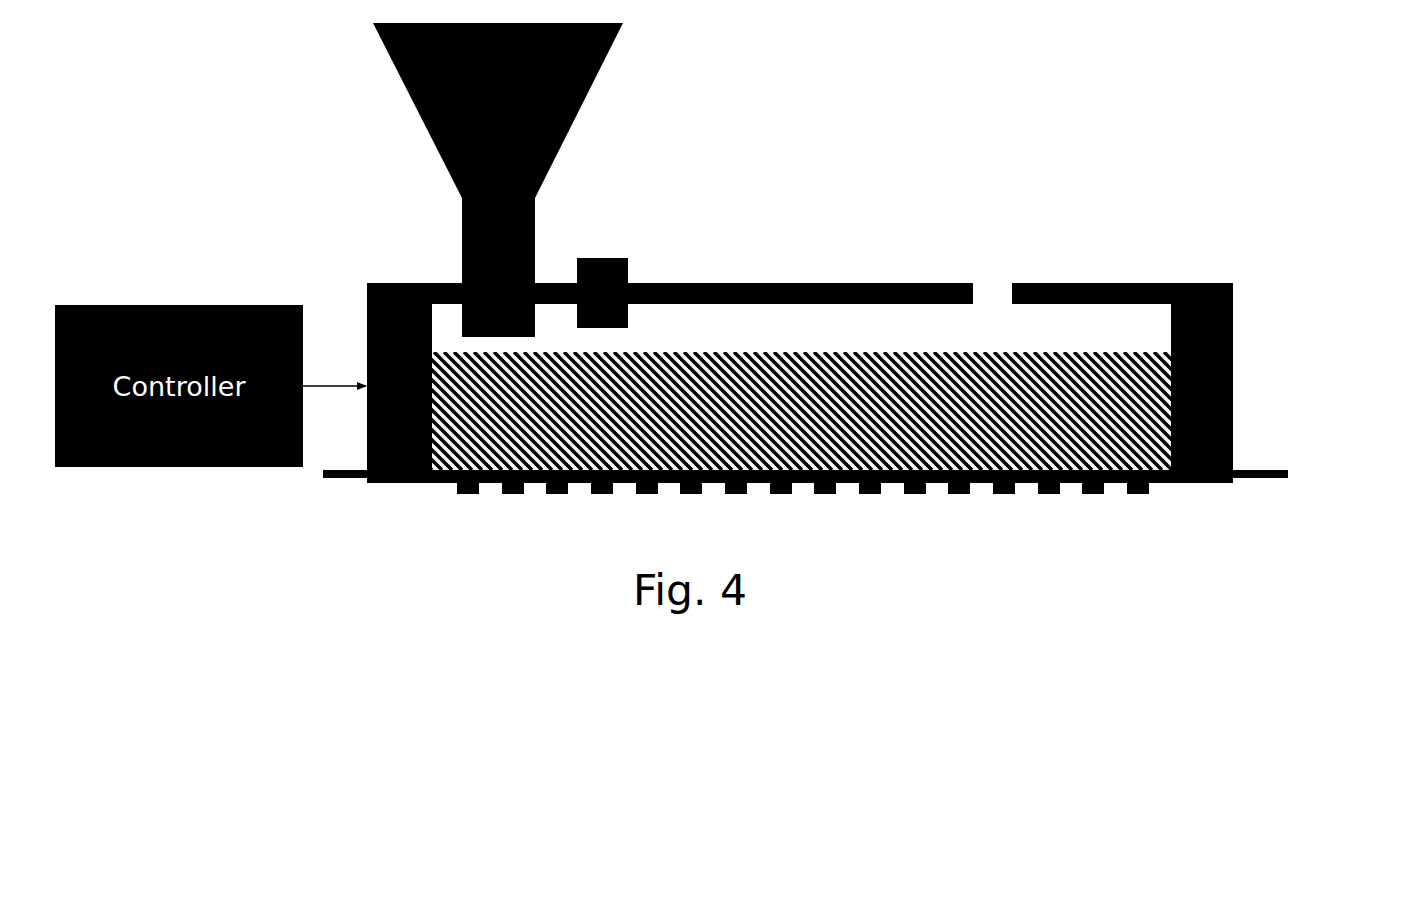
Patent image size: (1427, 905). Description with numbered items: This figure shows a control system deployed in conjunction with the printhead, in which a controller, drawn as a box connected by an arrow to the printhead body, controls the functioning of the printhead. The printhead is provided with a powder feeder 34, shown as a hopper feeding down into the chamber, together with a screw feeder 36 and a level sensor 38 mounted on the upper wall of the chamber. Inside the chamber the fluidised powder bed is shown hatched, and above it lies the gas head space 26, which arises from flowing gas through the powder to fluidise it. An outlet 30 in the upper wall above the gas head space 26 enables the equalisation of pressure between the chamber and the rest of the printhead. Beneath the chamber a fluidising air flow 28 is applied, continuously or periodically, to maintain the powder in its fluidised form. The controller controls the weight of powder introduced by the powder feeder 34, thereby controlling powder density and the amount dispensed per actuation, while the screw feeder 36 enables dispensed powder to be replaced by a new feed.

The gas head space 26 is at (1102, 327).
The fluidising air flow 28 is at (1290, 474).
The outlet 30 is at (994, 281).
The powder feeder 34 is at (602, 125).
The screw feeder 36 is at (430, 248).
The level sensor 38 is at (613, 245).